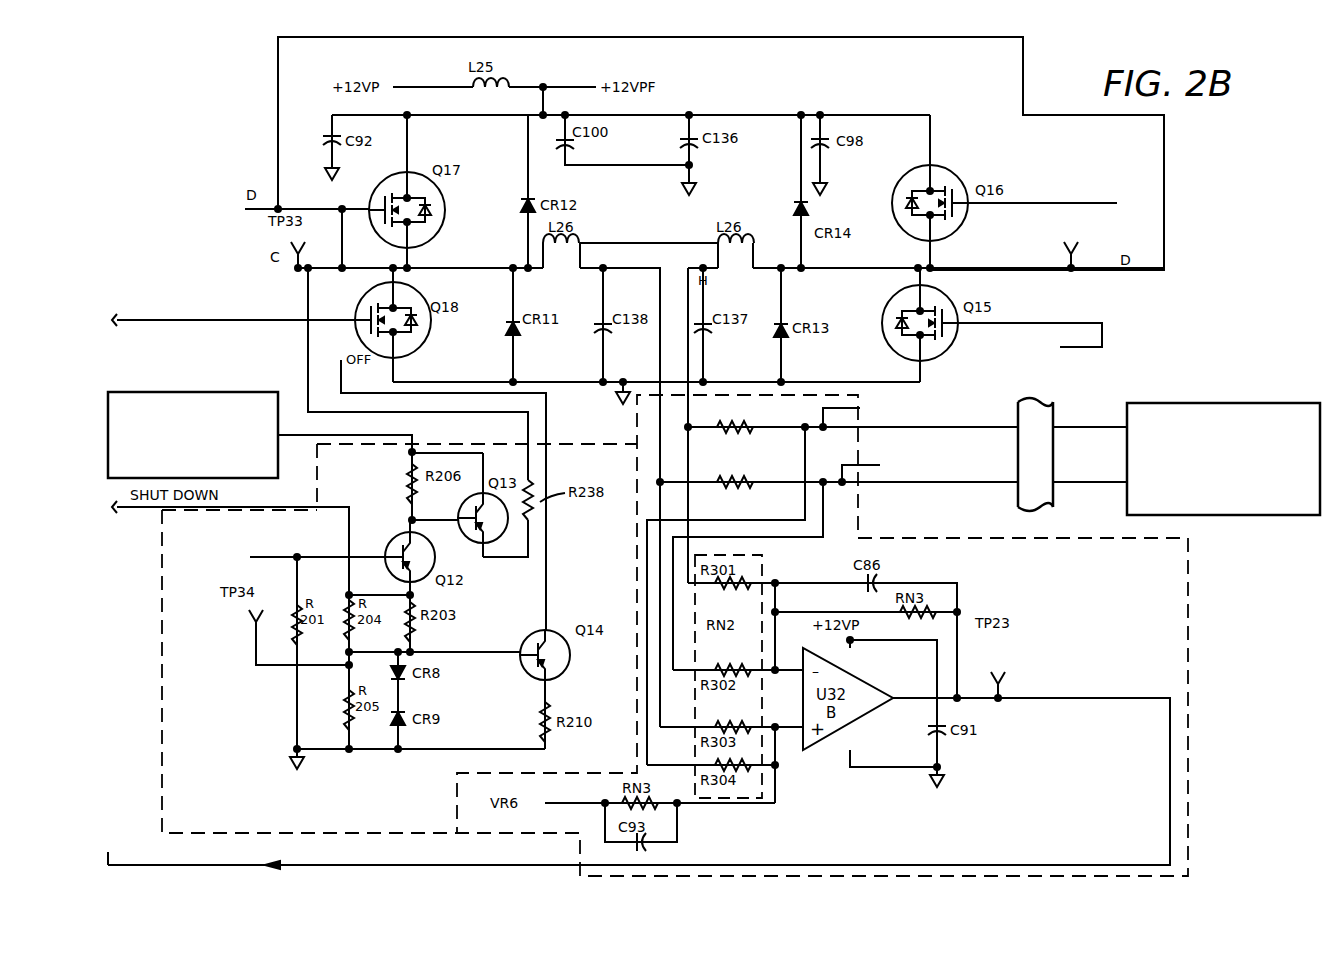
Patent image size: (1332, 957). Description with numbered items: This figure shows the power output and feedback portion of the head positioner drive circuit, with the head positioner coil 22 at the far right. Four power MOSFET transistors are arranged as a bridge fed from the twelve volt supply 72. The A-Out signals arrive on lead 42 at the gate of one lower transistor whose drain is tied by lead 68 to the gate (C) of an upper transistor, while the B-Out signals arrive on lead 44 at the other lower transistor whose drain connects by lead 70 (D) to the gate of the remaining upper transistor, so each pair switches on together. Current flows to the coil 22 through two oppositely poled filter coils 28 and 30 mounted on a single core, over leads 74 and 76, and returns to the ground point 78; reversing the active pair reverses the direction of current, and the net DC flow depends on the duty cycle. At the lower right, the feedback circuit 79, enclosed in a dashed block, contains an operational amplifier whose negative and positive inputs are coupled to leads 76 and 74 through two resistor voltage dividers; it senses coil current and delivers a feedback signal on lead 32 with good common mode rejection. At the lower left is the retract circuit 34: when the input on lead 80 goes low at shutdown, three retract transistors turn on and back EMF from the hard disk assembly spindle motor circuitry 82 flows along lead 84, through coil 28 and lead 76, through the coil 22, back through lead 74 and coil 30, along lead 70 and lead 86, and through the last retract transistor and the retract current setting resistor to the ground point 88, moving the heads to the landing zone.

The lead 70 is at (828, 44).
The 12 volt supply 72 is at (580, 82).
The lead 68 is at (275, 265).
The lead 84 is at (305, 304).
The lead 86 is at (341, 366).
The lead 42 is at (262, 315).
The lead 44 is at (1053, 323).
The hard disk assembly spindle motor circuitry 82 is at (183, 392).
The lead 80 is at (280, 553).
The retract circuit 34 is at (162, 641).
The ground point 88 is at (292, 766).
The ground point 78 is at (622, 396).
The coil 28 is at (602, 242).
The coil 30 is at (762, 242).
The lead 74 is at (945, 427).
The lead 76 is at (990, 482).
The head positioner coil 22 is at (1222, 403).
The feedback circuit 79 is at (1188, 590).
The lead 32 is at (982, 865).